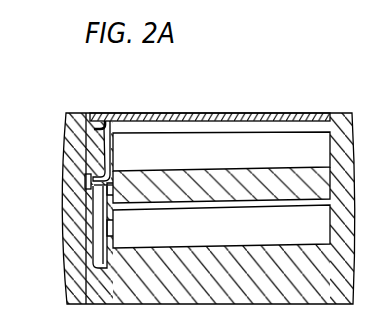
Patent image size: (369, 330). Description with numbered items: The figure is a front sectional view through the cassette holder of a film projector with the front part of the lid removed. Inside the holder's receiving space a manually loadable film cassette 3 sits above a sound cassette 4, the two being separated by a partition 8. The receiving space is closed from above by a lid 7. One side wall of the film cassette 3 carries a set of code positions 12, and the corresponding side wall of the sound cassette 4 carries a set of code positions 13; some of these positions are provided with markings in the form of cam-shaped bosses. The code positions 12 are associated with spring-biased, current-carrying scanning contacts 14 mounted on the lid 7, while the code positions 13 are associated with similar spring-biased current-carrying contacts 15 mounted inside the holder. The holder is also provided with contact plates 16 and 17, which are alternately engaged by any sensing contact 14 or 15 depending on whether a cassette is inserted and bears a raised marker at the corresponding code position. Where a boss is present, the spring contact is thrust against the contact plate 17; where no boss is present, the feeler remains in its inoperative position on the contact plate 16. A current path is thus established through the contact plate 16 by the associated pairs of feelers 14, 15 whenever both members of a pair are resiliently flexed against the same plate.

The film cassette 3 is at (221, 151).
The sound cassette 4 is at (221, 226).
The lid 7 is at (246, 120).
The partition 8 is at (281, 187).
The code positions 12 is at (106, 159).
The code positions 13 is at (107, 230).
The scanning contacts 14 is at (98, 130).
The scanning contacts 15 is at (93, 264).
The contact plate 16 is at (92, 186).
The contact plate 17 is at (86, 192).